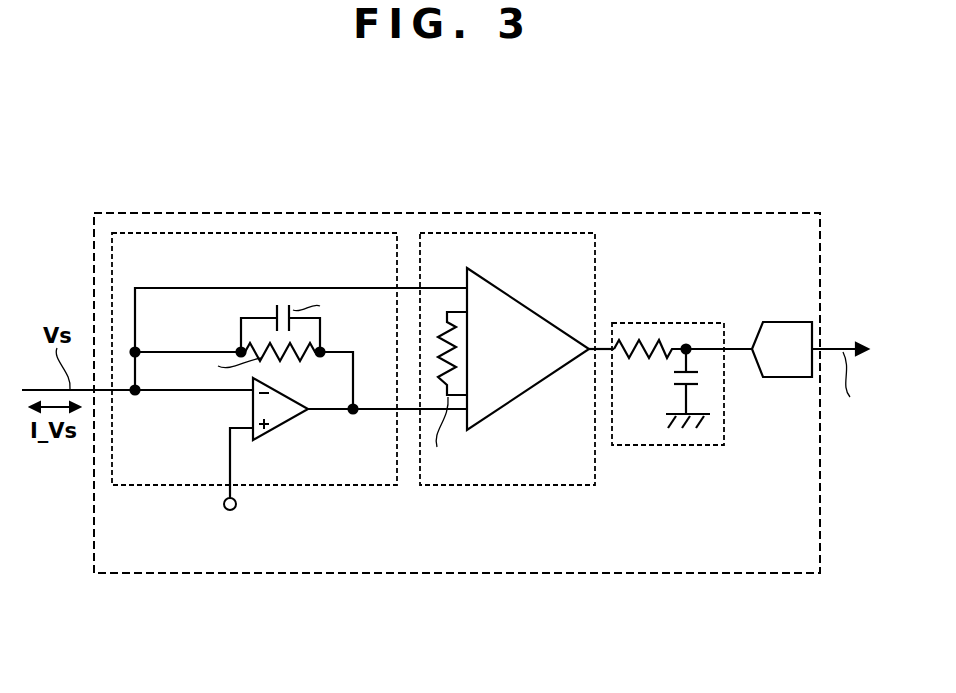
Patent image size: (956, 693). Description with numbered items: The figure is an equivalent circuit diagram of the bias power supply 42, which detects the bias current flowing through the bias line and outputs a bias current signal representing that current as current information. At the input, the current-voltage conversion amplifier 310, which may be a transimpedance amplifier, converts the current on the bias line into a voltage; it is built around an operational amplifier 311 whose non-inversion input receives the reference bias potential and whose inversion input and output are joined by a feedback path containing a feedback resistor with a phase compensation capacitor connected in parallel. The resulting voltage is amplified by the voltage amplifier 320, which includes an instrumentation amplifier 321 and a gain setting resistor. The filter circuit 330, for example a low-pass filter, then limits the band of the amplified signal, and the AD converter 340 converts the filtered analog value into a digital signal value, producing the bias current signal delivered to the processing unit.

The bias power supply 42 is at (367, 575).
The current-voltage conversion amplifier 310 is at (336, 487).
The operational amplifier 311 is at (276, 437).
The voltage amplifier 320 is at (520, 487).
The instrumentation amplifier 321 is at (517, 300).
The filter circuit 330 is at (676, 447).
The AD converter 340 is at (773, 378).